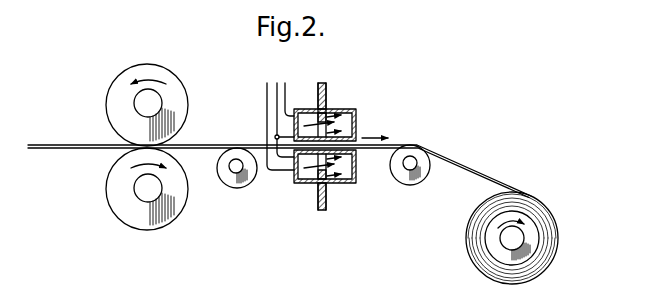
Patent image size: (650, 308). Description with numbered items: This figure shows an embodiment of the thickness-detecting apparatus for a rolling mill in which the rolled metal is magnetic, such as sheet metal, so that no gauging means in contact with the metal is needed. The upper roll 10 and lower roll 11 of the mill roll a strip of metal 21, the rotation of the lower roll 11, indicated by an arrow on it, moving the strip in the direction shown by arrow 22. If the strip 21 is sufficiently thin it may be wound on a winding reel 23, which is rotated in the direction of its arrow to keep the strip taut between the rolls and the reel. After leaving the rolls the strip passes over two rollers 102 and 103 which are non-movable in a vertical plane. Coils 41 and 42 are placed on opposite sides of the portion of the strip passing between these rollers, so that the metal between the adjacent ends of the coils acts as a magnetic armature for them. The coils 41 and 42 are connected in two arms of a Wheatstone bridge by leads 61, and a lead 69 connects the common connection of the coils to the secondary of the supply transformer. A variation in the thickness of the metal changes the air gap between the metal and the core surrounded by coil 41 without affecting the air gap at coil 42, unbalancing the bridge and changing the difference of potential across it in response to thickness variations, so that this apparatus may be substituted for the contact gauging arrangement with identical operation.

The upper roll 10 is at (175, 76).
The lower roll 11 is at (112, 212).
The strip of metal 21 is at (198, 144).
The arrow 22 is at (373, 136).
The winding reel 23 is at (532, 238).
The coil 41 is at (345, 109).
The coil 42 is at (340, 184).
The leads 61 is at (267, 88).
The lead 69 is at (279, 78).
The roller 102 is at (230, 186).
The roller 103 is at (397, 182).